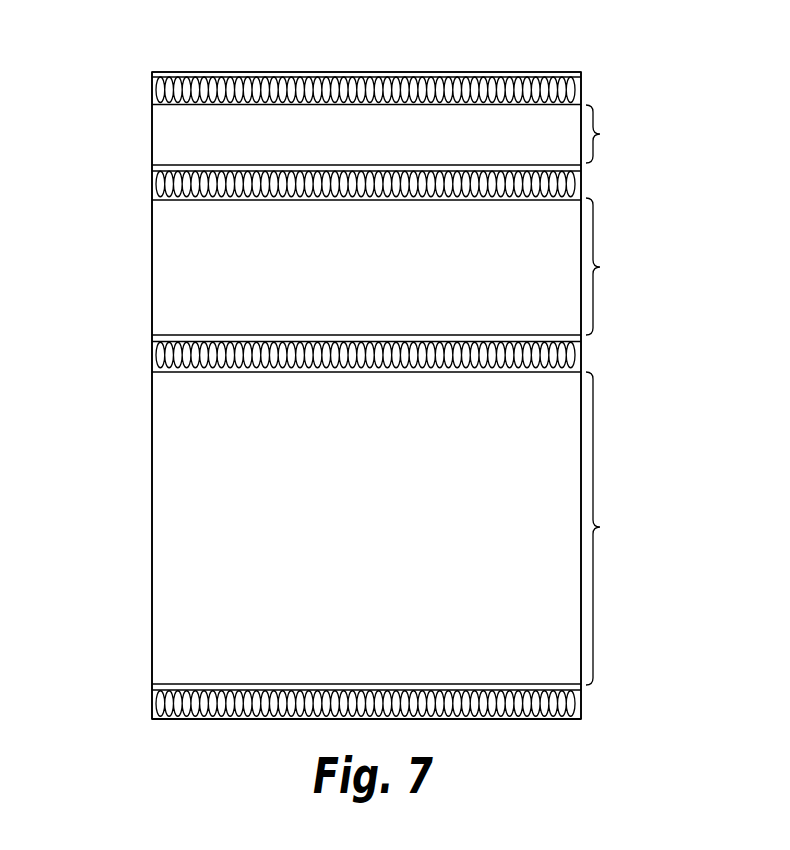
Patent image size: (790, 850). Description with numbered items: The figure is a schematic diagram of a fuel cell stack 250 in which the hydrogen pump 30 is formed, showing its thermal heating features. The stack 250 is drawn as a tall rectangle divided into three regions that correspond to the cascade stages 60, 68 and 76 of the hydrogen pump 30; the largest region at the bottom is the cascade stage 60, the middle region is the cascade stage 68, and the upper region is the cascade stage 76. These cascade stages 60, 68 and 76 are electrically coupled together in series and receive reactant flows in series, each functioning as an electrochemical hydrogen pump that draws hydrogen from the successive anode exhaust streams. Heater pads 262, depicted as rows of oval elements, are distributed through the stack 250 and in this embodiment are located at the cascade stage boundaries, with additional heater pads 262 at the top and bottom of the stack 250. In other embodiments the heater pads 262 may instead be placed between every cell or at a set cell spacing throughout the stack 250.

The hydrogen pump 30 is at (584, 41).
The stack 250 is at (146, 519).
The heater pads 262 is at (152, 95).
The cascade stage 76 is at (608, 134).
The cascade stage 68 is at (608, 266).
The cascade stage 60 is at (608, 528).